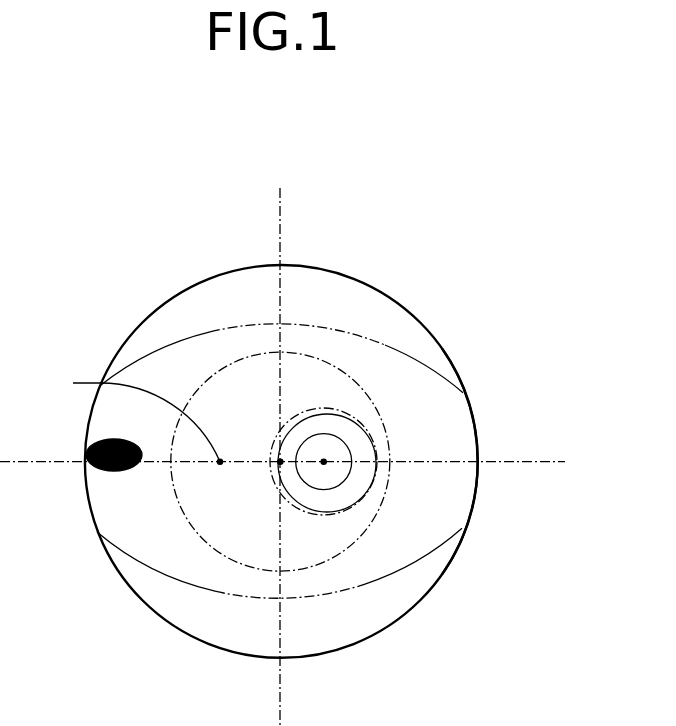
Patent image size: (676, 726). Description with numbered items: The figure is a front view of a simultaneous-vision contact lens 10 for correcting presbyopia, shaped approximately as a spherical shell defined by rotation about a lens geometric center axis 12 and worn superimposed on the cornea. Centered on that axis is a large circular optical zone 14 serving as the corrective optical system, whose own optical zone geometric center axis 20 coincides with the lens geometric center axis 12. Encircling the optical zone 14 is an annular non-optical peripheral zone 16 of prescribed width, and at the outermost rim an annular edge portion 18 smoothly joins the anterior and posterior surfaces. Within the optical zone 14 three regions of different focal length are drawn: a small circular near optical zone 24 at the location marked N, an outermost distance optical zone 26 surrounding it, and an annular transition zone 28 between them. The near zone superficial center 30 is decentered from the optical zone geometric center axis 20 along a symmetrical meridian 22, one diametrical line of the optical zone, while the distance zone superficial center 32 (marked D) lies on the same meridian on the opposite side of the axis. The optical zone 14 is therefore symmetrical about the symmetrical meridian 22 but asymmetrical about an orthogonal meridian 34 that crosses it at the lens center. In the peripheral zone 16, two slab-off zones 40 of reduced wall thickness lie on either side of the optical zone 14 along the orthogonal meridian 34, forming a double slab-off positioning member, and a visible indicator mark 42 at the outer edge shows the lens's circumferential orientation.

The contact lens 10 is at (492, 267).
The lens geometric center axis 12 is at (280, 461).
The optical zone geometric center axis 20 is at (280, 461).
The optical zone 14 is at (400, 407).
The peripheral zone 16 is at (465, 438).
The edge portion 18 is at (476, 492).
The symmetrical meridian 22 is at (543, 462).
The near optical zone 24 is at (332, 473).
The distance optical zone 26 is at (238, 533).
The transition zone 28 is at (323, 503).
The near zone superficial center 30 is at (324, 462).
The distance zone superficial center 32 is at (142, 420).
The orthogonal meridian 34 is at (280, 219).
The slab-off zones 40 is at (335, 298).
The indicator mark 42 is at (90, 437).